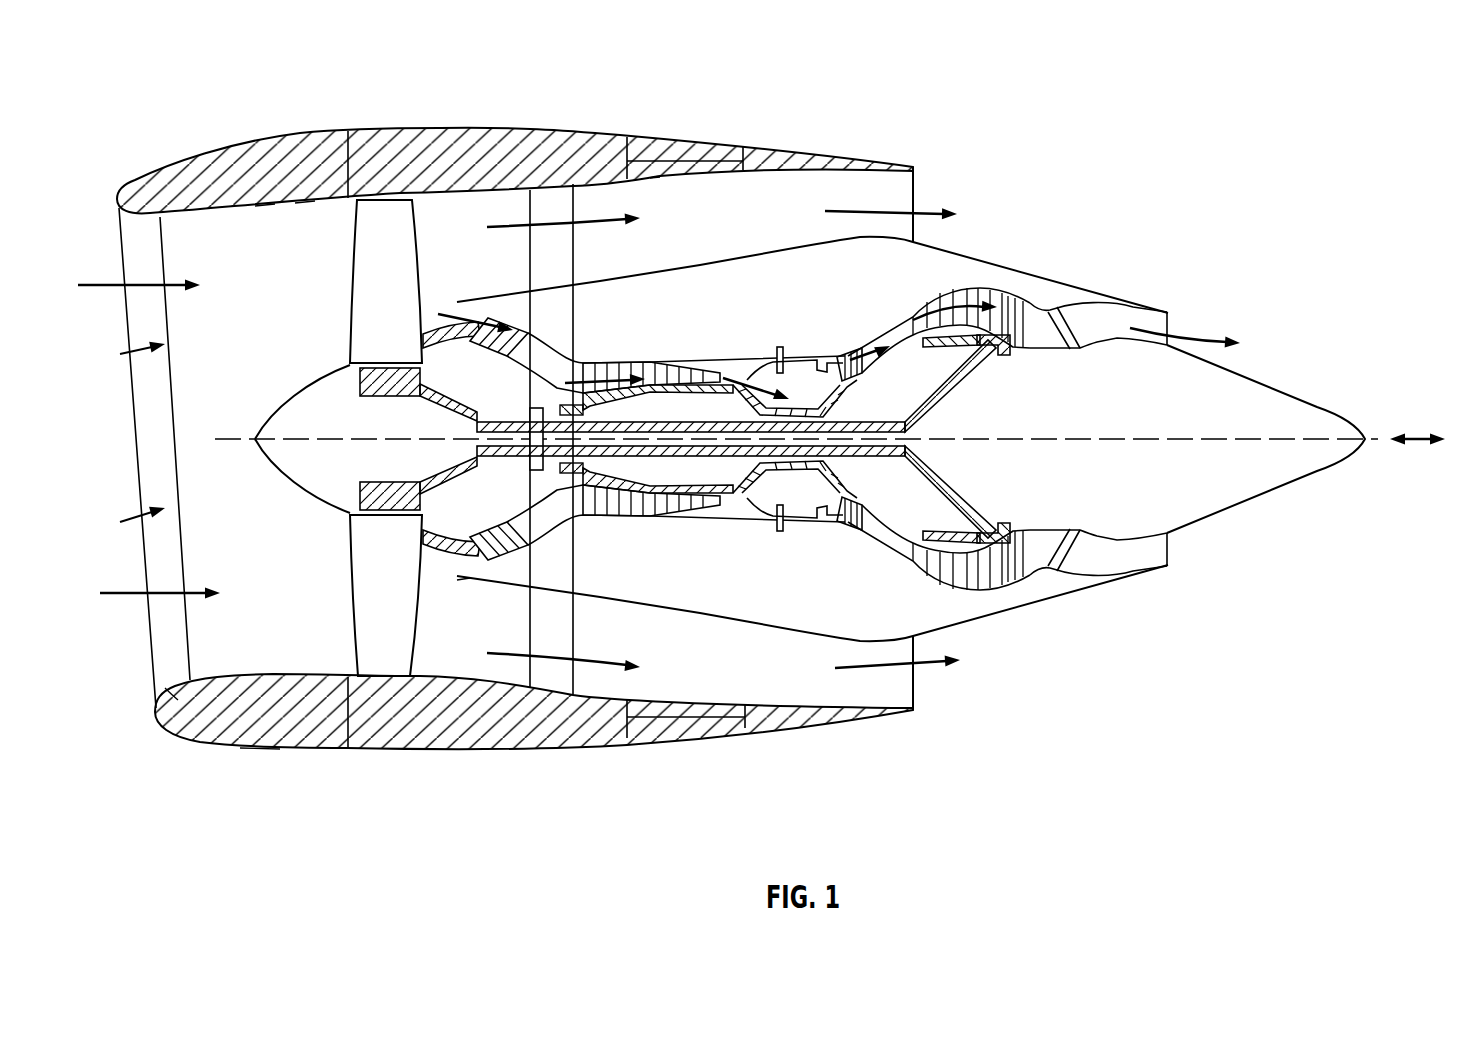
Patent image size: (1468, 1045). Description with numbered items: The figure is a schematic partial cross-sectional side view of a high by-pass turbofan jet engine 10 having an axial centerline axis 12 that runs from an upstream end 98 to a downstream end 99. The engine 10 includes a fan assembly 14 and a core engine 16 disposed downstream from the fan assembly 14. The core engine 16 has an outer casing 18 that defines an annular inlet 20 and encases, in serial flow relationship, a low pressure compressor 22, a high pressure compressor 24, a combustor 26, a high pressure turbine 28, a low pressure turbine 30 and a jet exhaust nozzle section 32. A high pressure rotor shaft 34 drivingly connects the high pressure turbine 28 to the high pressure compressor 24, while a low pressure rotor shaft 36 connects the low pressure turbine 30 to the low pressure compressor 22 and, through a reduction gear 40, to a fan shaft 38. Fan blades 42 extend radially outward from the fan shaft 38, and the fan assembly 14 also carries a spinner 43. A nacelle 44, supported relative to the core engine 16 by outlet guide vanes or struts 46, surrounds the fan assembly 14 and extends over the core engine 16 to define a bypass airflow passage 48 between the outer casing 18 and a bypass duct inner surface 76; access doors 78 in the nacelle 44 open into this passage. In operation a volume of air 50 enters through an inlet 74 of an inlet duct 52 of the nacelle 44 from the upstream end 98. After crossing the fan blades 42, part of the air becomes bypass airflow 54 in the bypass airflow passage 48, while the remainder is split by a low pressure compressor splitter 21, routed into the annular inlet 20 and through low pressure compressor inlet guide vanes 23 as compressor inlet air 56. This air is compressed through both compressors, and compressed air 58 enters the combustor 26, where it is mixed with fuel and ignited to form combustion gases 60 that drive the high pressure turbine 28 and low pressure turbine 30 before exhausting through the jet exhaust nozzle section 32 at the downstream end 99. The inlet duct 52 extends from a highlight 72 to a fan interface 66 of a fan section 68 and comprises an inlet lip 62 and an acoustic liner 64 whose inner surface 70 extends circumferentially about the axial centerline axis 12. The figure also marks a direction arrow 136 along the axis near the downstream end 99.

The high by-pass turbofan jet engine 10 is at (1092, 127).
The axial centerline axis 12 is at (1125, 439).
The fan assembly 14 is at (452, 230).
The core engine 16 is at (776, 243).
The outer casing 18 is at (750, 627).
The annular inlet 20 is at (460, 560).
The low pressure compressor splitter 21 is at (458, 585).
The low pressure compressor 22 is at (505, 508).
The low pressure compressor inlet guide vanes 23 is at (490, 313).
The high pressure compressor 24 is at (605, 510).
The combustor 26 is at (800, 513).
The high pressure turbine 28 is at (887, 513).
The low pressure turbine 30 is at (1000, 595).
The jet exhaust nozzle section 32 is at (1080, 565).
The high pressure rotor shaft 34 is at (847, 403).
The low pressure rotor shaft 36 is at (948, 398).
The fan shaft 38 is at (430, 398).
The reduction gear 40 is at (531, 400).
The fan blades 42 is at (363, 288).
The spinner 43 is at (305, 496).
The nacelle 44 is at (362, 135).
The outlet guide vanes or struts 46 is at (558, 197).
The bypass airflow passage 48 is at (745, 230).
The volume of air 50 is at (168, 287).
The inlet duct 52 is at (257, 753).
The bypass airflow 54 is at (588, 230).
The compressor inlet air 56 is at (453, 313).
The compressed air 58 is at (590, 363).
The combustion gases 60 is at (860, 360).
The inlet lip 62 is at (168, 689).
The acoustic liner 64 is at (264, 208).
The fan interface 66 is at (357, 153).
The fan section 68 is at (362, 737).
The inner surface 70 is at (305, 208).
The highlight 72 is at (126, 525).
The inlet 74 is at (125, 359).
The bypass duct inner surface 76 is at (650, 182).
The access doors 78 is at (650, 127).
The upstream end 98 is at (115, 452).
The downstream end 99 is at (1395, 492).
The axial direction 136 is at (1407, 443).